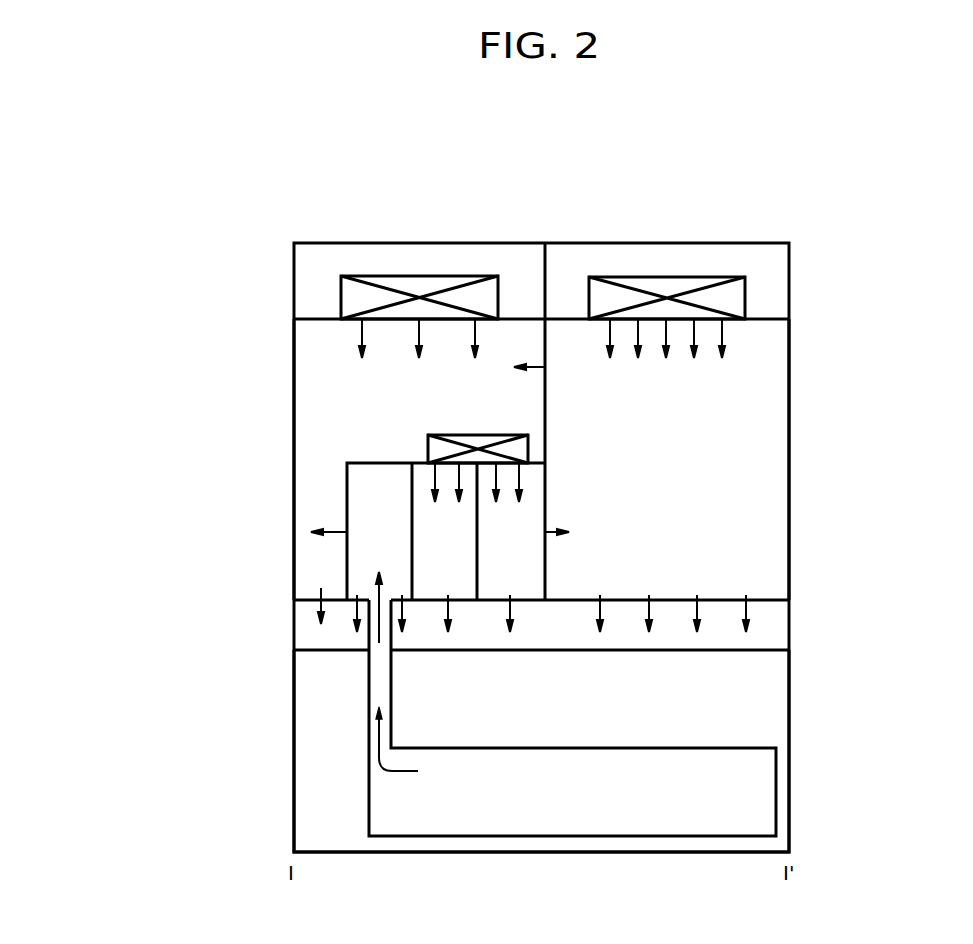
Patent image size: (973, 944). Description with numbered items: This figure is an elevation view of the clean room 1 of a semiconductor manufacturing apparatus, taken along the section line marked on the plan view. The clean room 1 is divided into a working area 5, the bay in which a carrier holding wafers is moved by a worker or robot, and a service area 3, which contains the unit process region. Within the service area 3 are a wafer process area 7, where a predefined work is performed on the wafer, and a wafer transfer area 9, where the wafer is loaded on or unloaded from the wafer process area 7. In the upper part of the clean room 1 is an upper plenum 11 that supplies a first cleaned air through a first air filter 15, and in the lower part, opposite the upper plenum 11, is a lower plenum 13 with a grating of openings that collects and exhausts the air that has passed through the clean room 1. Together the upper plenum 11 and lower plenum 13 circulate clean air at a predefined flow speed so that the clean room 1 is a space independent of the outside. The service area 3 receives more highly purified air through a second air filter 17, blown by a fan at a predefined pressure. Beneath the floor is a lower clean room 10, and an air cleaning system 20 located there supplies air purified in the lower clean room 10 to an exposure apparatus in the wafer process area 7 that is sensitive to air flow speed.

The clean room 1 is at (815, 206).
The service area 3 is at (318, 418).
The working area 5 is at (757, 438).
The wafer process area 7 is at (425, 540).
The wafer transfer area 9 is at (530, 500).
The lower clean room 10 is at (754, 703).
The upper plenum 11 is at (778, 281).
The lower plenum 13 is at (765, 630).
The first air filter 15 is at (667, 277).
The second air filter 17 is at (528, 446).
The air cleaning system 20 is at (760, 797).